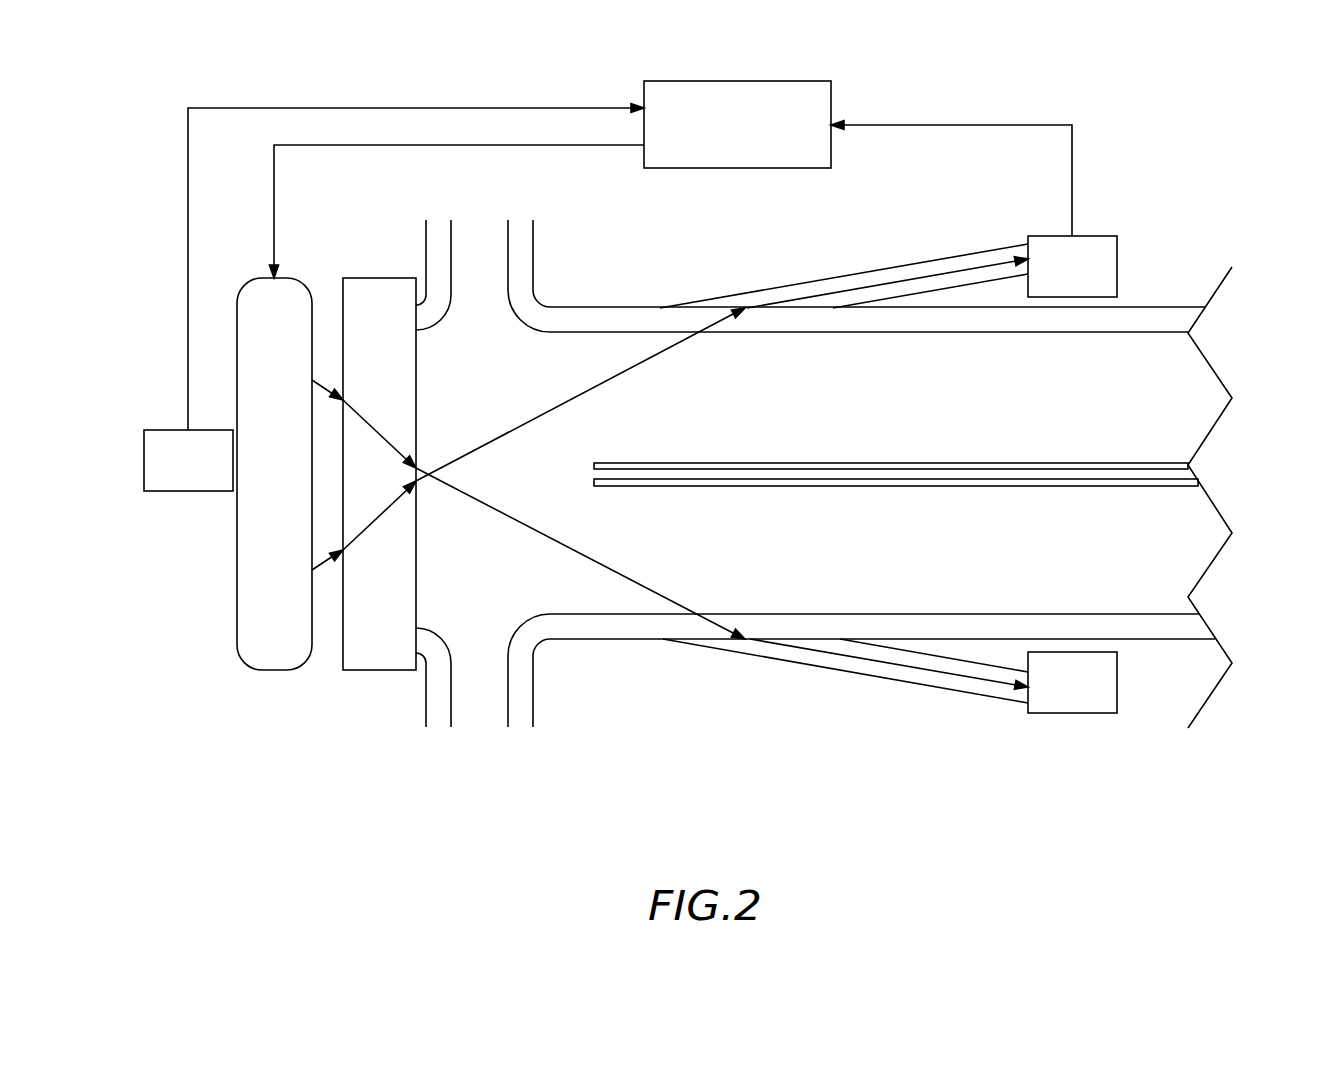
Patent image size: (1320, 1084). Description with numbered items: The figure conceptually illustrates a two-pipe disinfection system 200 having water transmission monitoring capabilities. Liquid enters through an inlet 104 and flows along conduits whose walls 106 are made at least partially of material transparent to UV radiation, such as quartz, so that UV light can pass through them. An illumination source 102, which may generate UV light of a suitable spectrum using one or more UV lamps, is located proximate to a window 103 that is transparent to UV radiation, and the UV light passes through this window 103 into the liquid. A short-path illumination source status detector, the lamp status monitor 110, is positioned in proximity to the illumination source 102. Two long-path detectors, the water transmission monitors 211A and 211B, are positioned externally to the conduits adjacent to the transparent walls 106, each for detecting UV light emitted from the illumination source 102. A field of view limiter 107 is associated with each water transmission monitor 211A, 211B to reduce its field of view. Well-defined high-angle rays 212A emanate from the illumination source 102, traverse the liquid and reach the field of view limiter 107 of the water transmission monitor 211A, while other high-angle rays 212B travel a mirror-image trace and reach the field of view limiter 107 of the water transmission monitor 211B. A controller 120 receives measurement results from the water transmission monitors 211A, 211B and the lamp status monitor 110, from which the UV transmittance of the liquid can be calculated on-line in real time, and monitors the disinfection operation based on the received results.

The controller 120 is at (737, 81).
The lamp status monitor 110 is at (188, 491).
The illumination source 102 is at (237, 627).
The window 103 is at (381, 278).
The inlet 104 is at (477, 265).
The walls 106 is at (607, 628).
The disinfection system 200 is at (588, 766).
The water transmission monitor 211A is at (1088, 236).
The water transmission monitor 211B is at (1088, 713).
The field of view limiter 107 is at (807, 282).
The high-angle rays 212A is at (560, 404).
The high-angle rays 212B is at (560, 543).